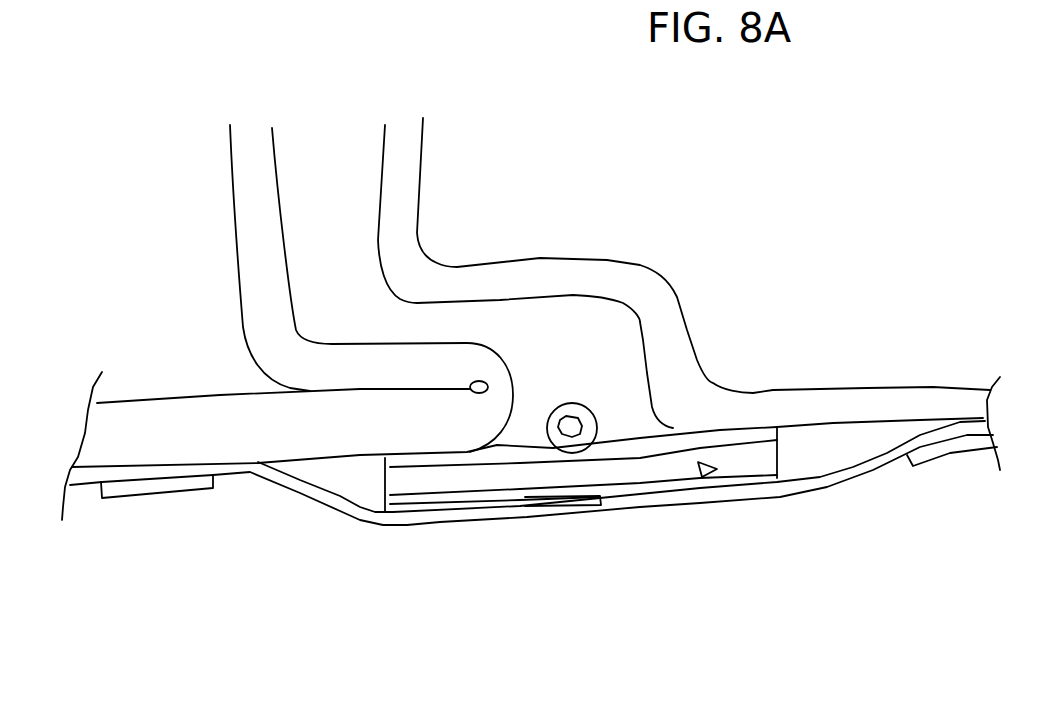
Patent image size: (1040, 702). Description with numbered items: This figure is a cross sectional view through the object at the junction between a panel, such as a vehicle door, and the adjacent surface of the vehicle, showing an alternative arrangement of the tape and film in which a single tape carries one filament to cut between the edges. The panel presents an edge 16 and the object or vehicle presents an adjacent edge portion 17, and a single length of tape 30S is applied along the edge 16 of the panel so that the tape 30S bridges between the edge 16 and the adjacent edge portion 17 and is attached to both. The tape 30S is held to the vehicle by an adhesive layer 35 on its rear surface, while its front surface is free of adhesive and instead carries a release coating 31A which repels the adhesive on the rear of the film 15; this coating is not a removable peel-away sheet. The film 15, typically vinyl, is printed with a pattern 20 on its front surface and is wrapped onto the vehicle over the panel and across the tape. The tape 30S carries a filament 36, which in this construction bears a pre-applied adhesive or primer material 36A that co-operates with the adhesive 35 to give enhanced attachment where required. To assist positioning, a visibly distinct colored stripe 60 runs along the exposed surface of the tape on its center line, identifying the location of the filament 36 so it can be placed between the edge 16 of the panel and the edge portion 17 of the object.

The film 15 is at (282, 480).
The edge of the panel 16 is at (438, 367).
The edge portion of the object 17 is at (663, 312).
The pattern 20 is at (128, 492).
The single tape 30S is at (715, 470).
The release coating 31A is at (440, 500).
The adhesive layer 35 is at (722, 438).
The filament 36 is at (583, 407).
The pre-applied adhesive or primer material 36A is at (568, 407).
The visibly distinct colored stripe 60 is at (600, 505).